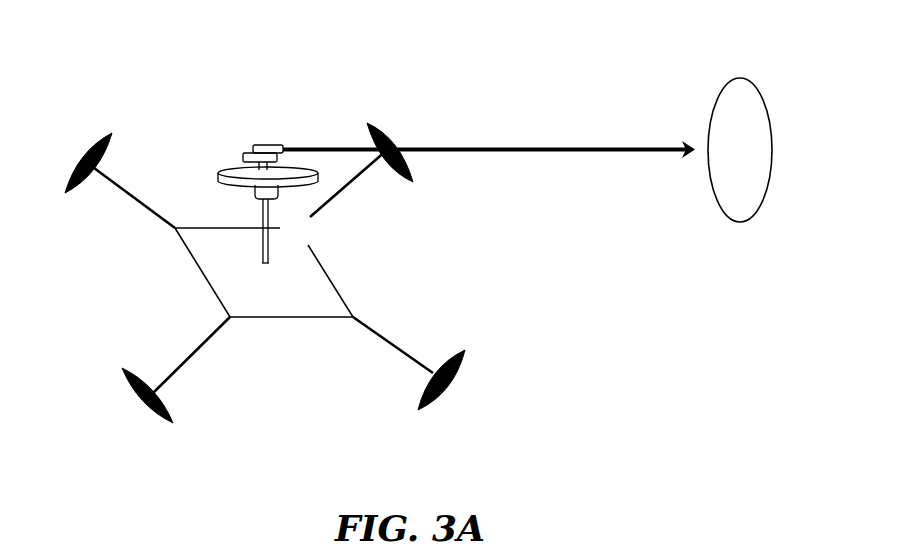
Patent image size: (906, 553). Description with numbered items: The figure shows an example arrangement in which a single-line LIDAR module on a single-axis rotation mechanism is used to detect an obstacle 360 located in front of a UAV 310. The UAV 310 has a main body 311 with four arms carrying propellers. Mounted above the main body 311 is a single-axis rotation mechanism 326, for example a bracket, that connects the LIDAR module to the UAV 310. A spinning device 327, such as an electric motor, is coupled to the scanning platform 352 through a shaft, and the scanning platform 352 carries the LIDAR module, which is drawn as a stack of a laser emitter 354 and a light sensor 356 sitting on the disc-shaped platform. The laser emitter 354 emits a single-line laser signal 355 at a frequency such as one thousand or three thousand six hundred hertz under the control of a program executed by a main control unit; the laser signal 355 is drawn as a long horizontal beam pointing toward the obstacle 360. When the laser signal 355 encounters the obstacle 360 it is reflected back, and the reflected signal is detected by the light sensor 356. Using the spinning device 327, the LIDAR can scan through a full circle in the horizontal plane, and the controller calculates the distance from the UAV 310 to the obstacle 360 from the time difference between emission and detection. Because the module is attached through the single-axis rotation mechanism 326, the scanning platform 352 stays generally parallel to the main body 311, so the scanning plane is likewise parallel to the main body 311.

The UAV 310 is at (256, 273).
The main body 311 is at (264, 272).
The single-axis rotation mechanism 326 is at (227, 232).
The spinning device 327 is at (268, 196).
The scanning platform 352 is at (317, 177).
The laser emitter 354 is at (258, 146).
The laser signal 355 is at (578, 148).
The light sensor 356 is at (243, 160).
The obstacle 360 is at (738, 78).